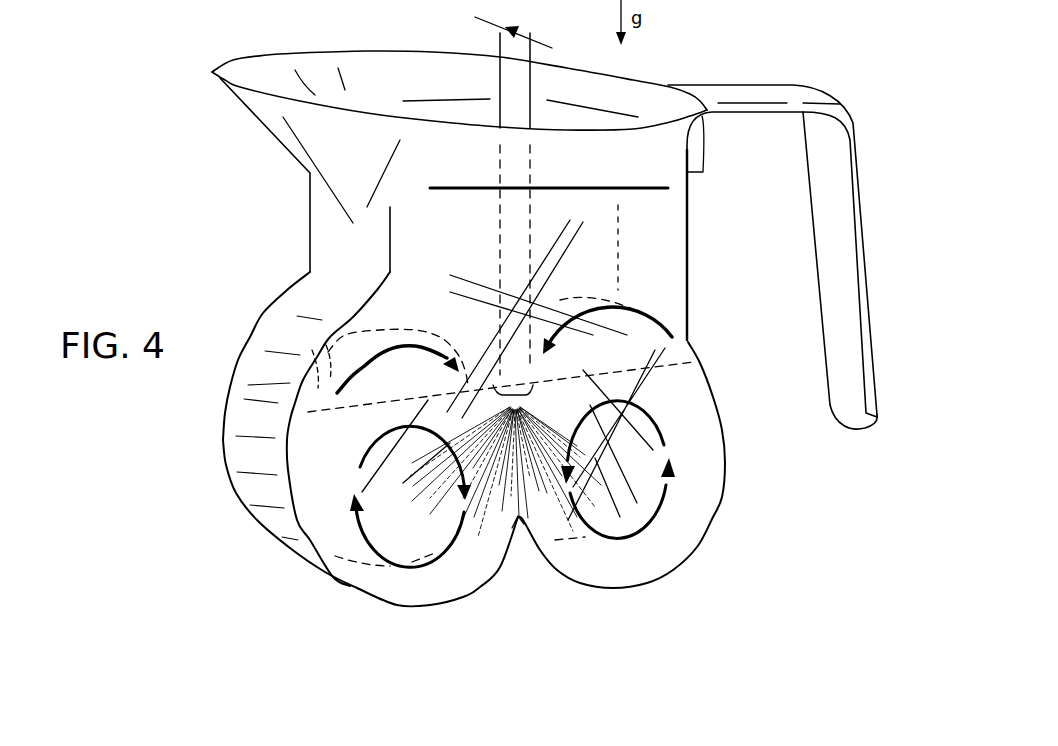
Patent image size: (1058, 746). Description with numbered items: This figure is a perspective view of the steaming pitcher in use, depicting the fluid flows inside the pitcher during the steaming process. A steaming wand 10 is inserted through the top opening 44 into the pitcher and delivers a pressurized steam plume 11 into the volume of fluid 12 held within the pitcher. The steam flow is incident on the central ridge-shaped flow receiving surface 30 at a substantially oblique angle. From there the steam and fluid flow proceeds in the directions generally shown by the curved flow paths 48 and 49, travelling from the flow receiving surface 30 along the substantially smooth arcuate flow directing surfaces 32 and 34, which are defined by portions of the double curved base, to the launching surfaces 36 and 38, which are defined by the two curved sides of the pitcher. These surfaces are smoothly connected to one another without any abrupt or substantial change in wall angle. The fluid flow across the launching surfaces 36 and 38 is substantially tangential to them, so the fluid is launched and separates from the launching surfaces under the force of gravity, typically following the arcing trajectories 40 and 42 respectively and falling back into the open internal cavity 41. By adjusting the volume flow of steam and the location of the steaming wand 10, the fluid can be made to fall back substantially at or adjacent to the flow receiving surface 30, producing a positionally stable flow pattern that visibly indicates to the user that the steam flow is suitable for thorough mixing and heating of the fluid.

The steaming wand 10 is at (520, 92).
The pressurized steam plume 11 is at (533, 451).
The volume of fluid 12 is at (322, 477).
The flow receiving surface 30 is at (518, 515).
The flow directing surface 32 is at (300, 548).
The flow directing surface 34 is at (686, 548).
The launching surface 36 is at (350, 278).
The launching surface 38 is at (688, 341).
The arcing trajectory 40 is at (450, 360).
The open internal cavity 41 is at (450, 292).
The arcing trajectory 42 is at (612, 310).
The top opening 44 is at (457, 108).
The curved flow path 48 is at (662, 505).
The curved flow path 49 is at (352, 521).